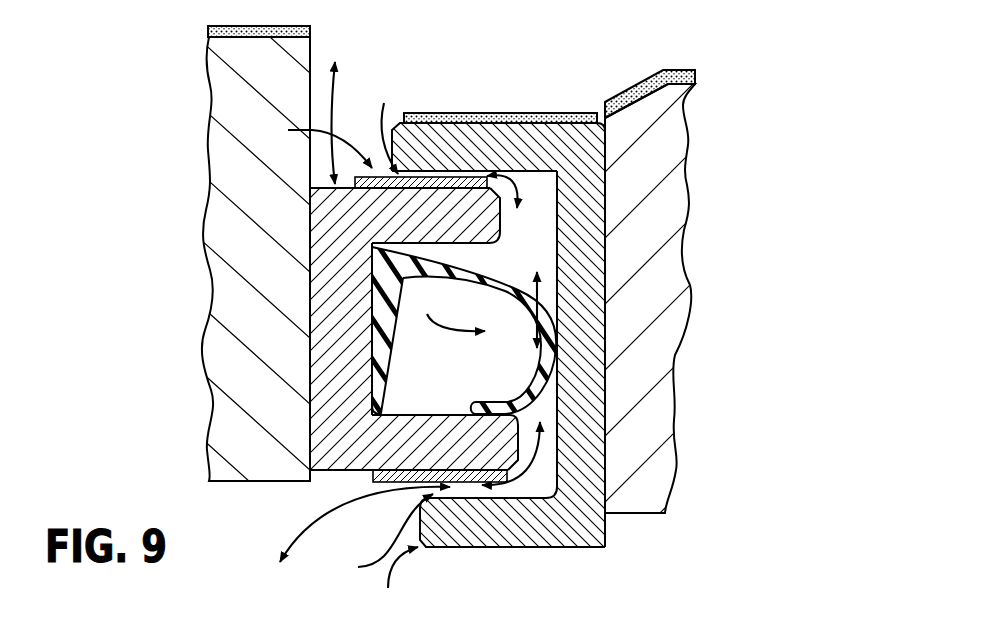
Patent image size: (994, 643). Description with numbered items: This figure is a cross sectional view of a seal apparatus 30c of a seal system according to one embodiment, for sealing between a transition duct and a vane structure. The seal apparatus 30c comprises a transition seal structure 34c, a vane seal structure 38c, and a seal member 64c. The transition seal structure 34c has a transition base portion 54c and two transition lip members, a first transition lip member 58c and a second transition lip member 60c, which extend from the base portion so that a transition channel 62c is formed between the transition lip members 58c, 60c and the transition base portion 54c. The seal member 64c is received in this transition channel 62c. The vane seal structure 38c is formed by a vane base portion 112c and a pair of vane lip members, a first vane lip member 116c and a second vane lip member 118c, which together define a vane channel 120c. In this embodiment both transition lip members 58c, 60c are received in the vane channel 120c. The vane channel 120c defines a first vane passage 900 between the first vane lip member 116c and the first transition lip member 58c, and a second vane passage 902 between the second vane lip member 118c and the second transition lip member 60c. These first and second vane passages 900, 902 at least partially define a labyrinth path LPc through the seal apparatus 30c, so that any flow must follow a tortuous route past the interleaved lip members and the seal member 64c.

The seal apparatus 30c is at (546, 85).
The transition seal structure 34c is at (309, 142).
The vane seal structure 38c is at (394, 578).
The transition base portion 54c is at (317, 322).
The first transition lip member 58c is at (430, 230).
The second transition lip member 60c is at (447, 423).
The transition channel 62c is at (392, 358).
The seal member 64c is at (510, 279).
The vane base portion 112c is at (593, 255).
The first vane lip member 116c is at (490, 130).
The second vane lip member 118c is at (525, 537).
The vane channel 120c is at (446, 311).
The first vane passage 900 is at (388, 127).
The second vane passage 902 is at (374, 538).
The labyrinth path LPc is at (293, 535).